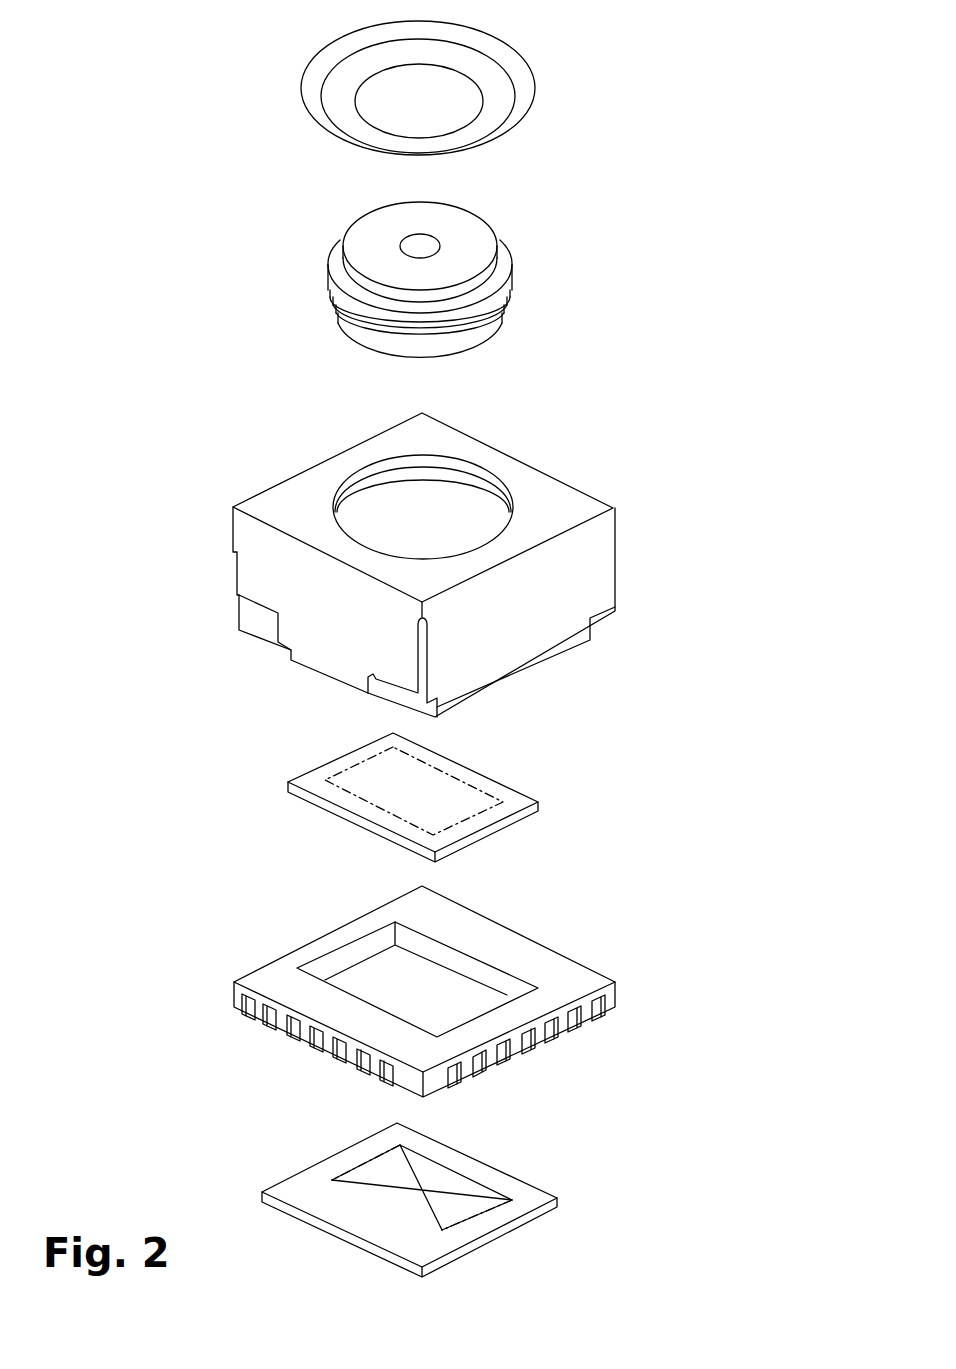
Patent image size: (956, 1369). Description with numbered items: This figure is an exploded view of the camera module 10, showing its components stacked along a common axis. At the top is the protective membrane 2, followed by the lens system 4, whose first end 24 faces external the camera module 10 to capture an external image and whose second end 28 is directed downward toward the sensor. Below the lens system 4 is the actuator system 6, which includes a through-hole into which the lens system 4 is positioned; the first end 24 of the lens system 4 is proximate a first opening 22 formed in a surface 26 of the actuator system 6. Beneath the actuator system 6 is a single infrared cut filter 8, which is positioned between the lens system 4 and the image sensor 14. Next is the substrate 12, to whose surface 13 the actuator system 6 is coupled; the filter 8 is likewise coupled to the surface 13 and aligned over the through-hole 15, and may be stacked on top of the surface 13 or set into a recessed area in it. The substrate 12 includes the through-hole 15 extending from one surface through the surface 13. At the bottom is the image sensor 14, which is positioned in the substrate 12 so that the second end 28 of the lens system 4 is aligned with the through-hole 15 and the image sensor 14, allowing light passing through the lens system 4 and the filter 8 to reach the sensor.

The camera module 10 is at (727, 98).
The protective membrane 2 is at (548, 103).
The lens system 4 is at (538, 267).
The first end 24 is at (375, 228).
The second end 28 is at (362, 348).
The actuator system 6 is at (620, 465).
The first opening 22 is at (392, 503).
The surface 26 is at (433, 440).
The infrared (IR) cut filter 8 is at (560, 781).
The substrate 12 is at (644, 960).
The surface 13 is at (517, 945).
The through-hole 15 is at (370, 983).
The image sensor 14 is at (582, 1165).